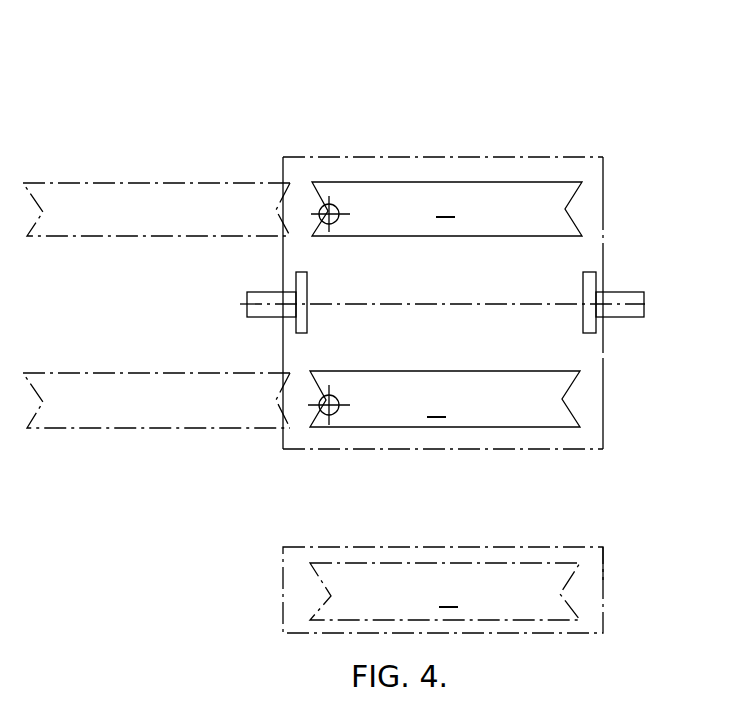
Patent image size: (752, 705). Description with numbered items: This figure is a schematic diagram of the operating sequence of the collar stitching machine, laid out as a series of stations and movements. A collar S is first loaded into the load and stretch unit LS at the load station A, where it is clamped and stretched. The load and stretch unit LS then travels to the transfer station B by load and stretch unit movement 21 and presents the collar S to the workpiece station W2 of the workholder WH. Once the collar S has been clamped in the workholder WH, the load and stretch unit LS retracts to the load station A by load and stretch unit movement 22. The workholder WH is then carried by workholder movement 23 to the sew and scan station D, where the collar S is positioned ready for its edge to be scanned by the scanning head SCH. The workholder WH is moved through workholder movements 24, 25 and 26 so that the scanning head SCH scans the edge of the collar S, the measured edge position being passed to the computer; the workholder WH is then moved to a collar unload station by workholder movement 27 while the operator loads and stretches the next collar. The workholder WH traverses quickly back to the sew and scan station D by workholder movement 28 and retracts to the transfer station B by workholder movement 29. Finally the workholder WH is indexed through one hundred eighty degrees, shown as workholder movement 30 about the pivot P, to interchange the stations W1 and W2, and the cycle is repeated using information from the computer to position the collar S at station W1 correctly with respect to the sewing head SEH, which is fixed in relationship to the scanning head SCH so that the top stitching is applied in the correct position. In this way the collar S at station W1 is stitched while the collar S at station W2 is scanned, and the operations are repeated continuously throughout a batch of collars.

The workholder movement 28 is at (223, 29).
The workholder movement 27 is at (270, 48).
The workholder movement 26 is at (284, 44).
The workholder movement 25 is at (587, 110).
The workholder movement 24 is at (603, 24).
The workholder WH is at (586, 157).
The workpiece station W1 is at (487, 207).
The workpiece station W2 is at (566, 406).
The collar S is at (445, 203).
The sewing head SEH is at (322, 207).
The scanning head SCH is at (320, 413).
The pivot pin P is at (266, 292).
The workholder movement 30 is at (672, 279).
The sew and scan station D is at (630, 390).
The transfer station B is at (630, 470).
The load station A is at (630, 553).
The workholder movement 29 is at (322, 460).
The load and stretch unit movement 22 is at (427, 457).
The load and stretch unit movement 21 is at (487, 465).
The workholder movement 23 is at (565, 462).
The load and stretch unit LS is at (603, 611).